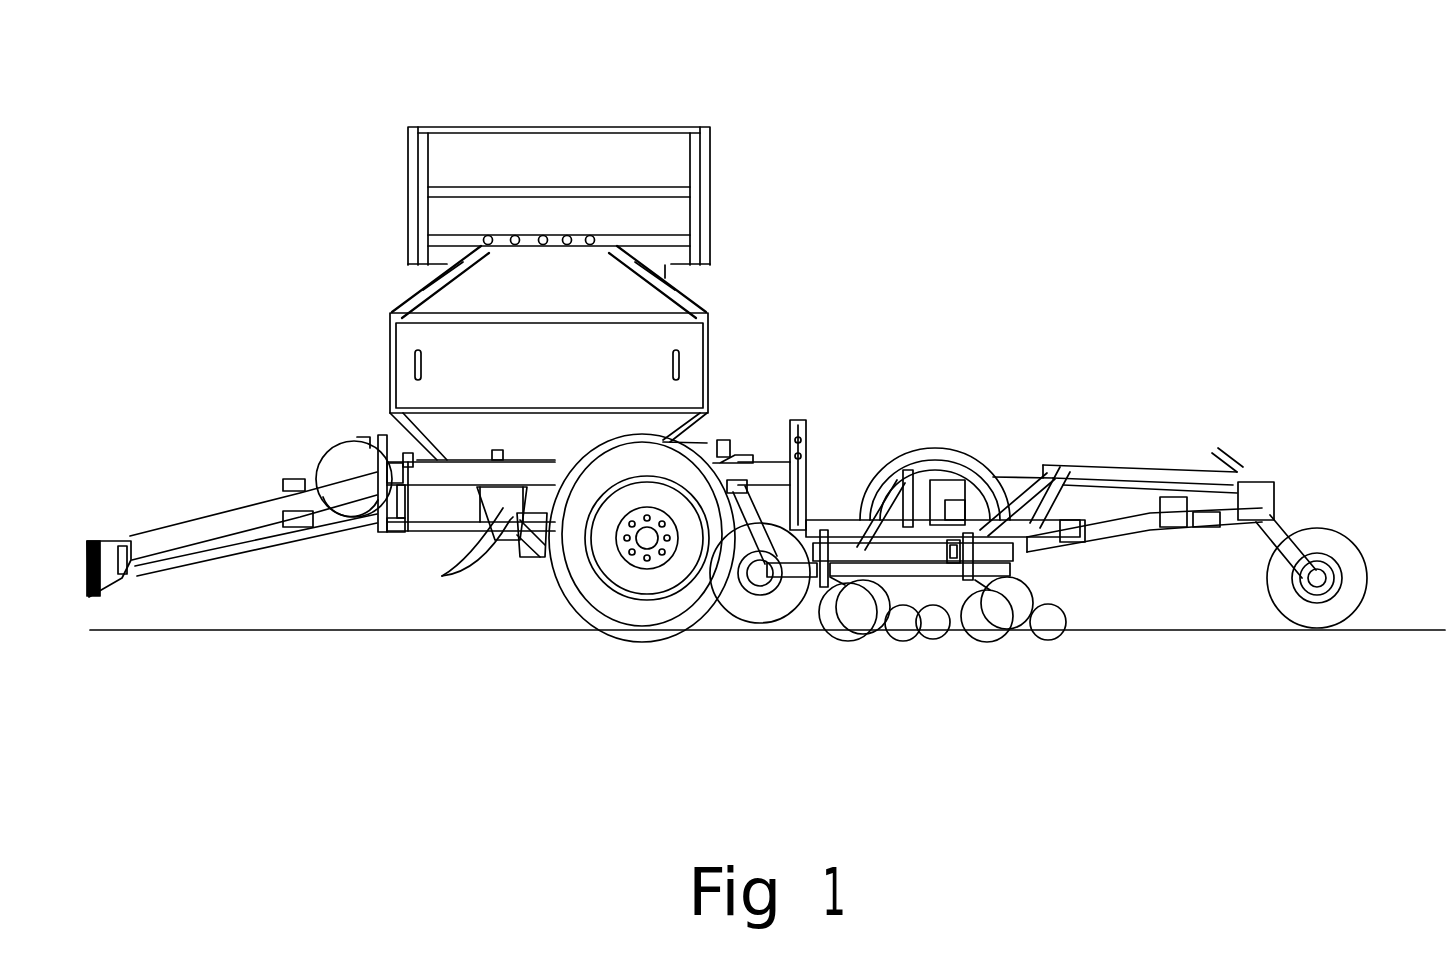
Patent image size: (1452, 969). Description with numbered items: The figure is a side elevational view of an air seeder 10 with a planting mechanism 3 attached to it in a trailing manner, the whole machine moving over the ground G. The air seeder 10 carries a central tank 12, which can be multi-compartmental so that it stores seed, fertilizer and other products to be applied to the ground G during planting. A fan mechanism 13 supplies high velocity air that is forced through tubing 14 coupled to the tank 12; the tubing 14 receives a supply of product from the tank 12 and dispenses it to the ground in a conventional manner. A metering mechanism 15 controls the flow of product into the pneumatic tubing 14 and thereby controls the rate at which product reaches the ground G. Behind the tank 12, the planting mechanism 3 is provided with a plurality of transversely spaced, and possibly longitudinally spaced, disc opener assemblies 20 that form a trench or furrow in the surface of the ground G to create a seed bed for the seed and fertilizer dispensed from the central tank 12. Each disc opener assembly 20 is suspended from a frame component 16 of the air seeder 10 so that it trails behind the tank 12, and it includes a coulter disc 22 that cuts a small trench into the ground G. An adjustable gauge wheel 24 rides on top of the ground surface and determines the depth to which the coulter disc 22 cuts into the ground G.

The air seeder 10 is at (752, 99).
The central tank 12 is at (657, 298).
The fan mechanism 13 is at (337, 450).
The tubing 14 is at (533, 557).
The metering mechanism 15 is at (442, 576).
The frame component 16 is at (863, 517).
The planting mechanism 3 is at (977, 393).
The disc opener assembly 20 is at (1005, 640).
The coulter disc 22 is at (827, 615).
The adjustable gauge wheel 24 is at (877, 637).
The ground G is at (140, 630).